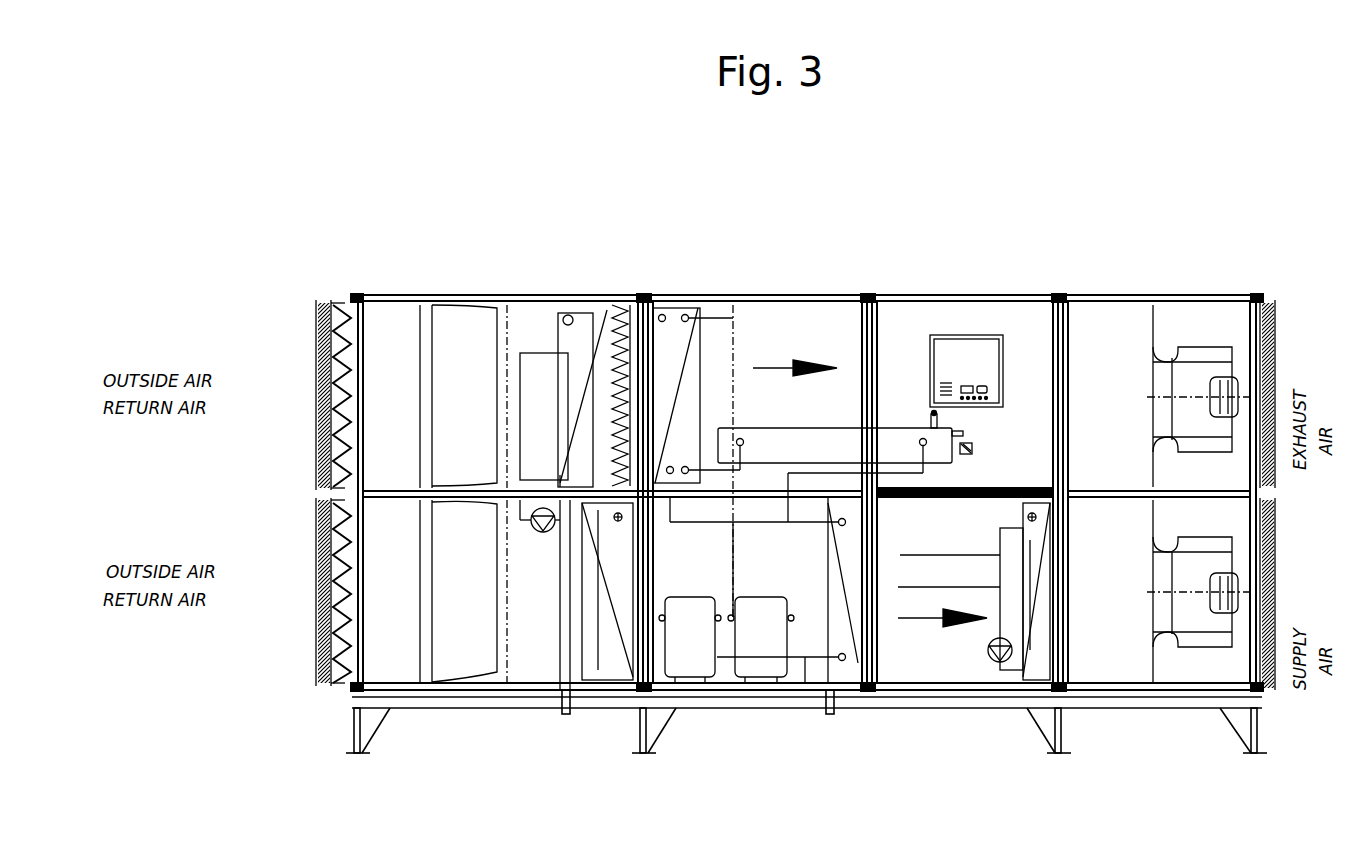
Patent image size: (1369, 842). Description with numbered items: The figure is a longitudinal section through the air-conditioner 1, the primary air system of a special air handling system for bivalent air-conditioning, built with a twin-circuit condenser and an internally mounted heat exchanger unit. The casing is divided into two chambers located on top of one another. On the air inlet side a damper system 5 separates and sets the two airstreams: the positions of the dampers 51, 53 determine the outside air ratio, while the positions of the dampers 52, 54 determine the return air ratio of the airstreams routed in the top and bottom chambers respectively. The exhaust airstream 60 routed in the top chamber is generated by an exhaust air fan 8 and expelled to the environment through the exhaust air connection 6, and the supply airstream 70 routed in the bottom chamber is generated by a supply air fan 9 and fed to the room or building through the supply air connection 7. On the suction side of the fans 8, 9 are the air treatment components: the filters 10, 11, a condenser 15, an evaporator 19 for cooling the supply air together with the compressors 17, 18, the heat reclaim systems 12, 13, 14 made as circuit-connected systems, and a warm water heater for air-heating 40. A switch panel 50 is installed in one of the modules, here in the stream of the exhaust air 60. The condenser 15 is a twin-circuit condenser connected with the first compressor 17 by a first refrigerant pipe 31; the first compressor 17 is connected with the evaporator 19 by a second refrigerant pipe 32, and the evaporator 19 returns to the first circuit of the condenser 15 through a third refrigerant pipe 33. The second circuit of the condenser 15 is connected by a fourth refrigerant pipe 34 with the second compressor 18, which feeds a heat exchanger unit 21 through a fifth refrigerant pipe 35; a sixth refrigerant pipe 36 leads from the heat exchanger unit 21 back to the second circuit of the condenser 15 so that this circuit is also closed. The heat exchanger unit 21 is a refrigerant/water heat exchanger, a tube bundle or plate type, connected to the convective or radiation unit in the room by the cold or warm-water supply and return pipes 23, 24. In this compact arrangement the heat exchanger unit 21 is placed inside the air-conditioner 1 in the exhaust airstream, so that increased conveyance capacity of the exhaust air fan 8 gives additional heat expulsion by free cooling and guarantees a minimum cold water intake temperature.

The air-conditioner 1 is at (407, 295).
The damper system 5 is at (330, 300).
The exhaust air connection 6 is at (1276, 336).
The supply air connection 7 is at (1273, 568).
The exhaust air fan 8 is at (1203, 372).
The supply air fan 9 is at (1193, 613).
The filter 10 is at (458, 310).
The filter 11 is at (458, 645).
The heat reclaim system 12 is at (588, 300).
The heat reclaim system 13 is at (605, 663).
The heat reclaim system 14 is at (543, 533).
The condenser 15 is at (680, 305).
The first compressor 17 is at (693, 660).
The second compressor 18 is at (763, 643).
The evaporator 19 is at (843, 672).
The heat exchanger unit 21 is at (827, 443).
The supply pipe 23 is at (930, 418).
The return pipe 24 is at (964, 434).
The first refrigerant pipe 31 is at (662, 570).
The second refrigerant pipe 32 is at (805, 690).
The third refrigerant pipe 33 is at (704, 523).
The fourth refrigerant pipe 34 is at (734, 340).
The fifth refrigerant pipe 35 is at (785, 560).
The sixth refrigerant pipe 36 is at (742, 455).
The warm water heater for air-heating 40 is at (1023, 677).
The switch panel 50 is at (957, 355).
The damper 51 is at (318, 350).
The damper 52 is at (318, 462).
The damper 53 is at (318, 532).
The damper 54 is at (318, 648).
The exhaust airstream 60 is at (787, 366).
The supply airstream 70 is at (923, 618).